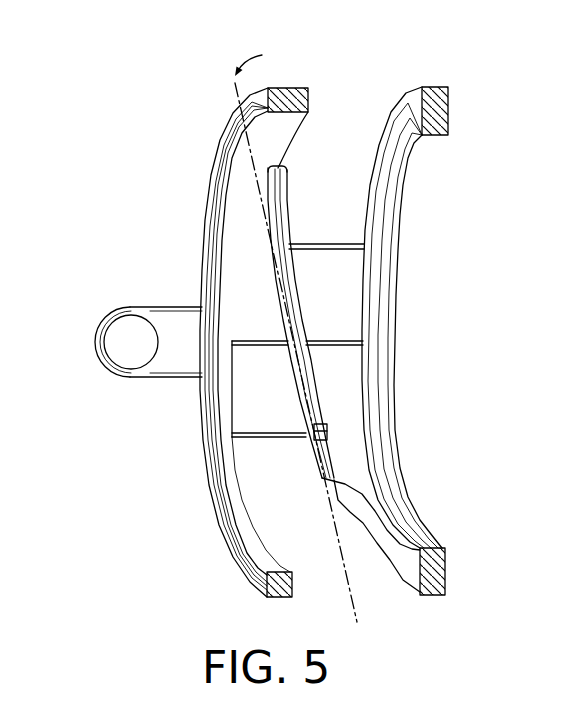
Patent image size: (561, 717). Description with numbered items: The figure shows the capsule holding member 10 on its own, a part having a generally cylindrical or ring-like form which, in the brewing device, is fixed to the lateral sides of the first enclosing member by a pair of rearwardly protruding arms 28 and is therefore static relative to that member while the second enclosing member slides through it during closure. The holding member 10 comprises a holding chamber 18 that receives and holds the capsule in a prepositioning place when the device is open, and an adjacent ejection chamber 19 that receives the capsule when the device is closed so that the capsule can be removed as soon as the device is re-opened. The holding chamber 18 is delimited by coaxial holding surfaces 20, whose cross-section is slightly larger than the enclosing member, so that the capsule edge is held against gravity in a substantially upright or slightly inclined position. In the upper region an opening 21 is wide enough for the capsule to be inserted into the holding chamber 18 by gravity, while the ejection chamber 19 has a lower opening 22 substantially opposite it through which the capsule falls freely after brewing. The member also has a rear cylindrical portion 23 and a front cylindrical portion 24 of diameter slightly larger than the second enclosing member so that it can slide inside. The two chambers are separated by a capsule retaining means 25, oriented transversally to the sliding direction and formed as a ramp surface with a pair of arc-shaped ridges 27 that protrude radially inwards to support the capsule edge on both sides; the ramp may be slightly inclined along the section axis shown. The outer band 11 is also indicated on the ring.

The capsule holding member 10 is at (267, 337).
The first arcuate member 11 is at (232, 213).
The holding chamber 18 is at (362, 306).
The ejection chamber 19 is at (265, 439).
The coaxial holding surfaces 20 is at (358, 443).
The opening 21 is at (357, 100).
The lower opening 22 is at (313, 583).
The rear cylindrical portion 23 is at (268, 596).
The front cylindrical portion 24 is at (430, 567).
The capsule retaining means 25 is at (260, 277).
The arc-shaped ridges 27 is at (298, 313).
The rearwardly protruding arms 28 is at (100, 340).